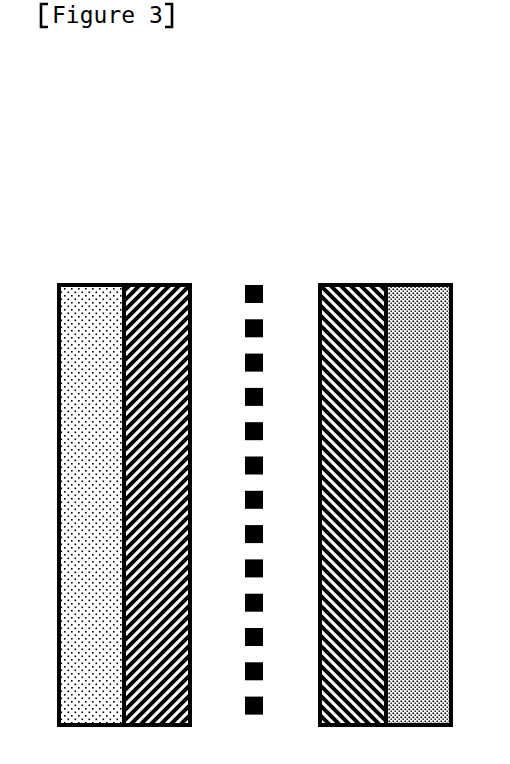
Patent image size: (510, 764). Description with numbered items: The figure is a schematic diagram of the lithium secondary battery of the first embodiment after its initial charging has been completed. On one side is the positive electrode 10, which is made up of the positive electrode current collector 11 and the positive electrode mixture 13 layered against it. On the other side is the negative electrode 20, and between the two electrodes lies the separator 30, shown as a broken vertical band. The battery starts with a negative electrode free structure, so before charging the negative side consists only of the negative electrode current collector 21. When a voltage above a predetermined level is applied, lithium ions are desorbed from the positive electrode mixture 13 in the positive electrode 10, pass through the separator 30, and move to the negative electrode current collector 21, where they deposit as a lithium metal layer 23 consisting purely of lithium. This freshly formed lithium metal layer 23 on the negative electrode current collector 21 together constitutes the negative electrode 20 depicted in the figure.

The positive electrode 10 is at (129, 415).
The positive electrode current collector 11 is at (93, 283).
The positive electrode mixture 13 is at (158, 283).
The negative electrode 20 is at (380, 415).
The negative electrode current collector 21 is at (420, 283).
The lithium metal layer 23 is at (355, 283).
The separator 30 is at (258, 285).